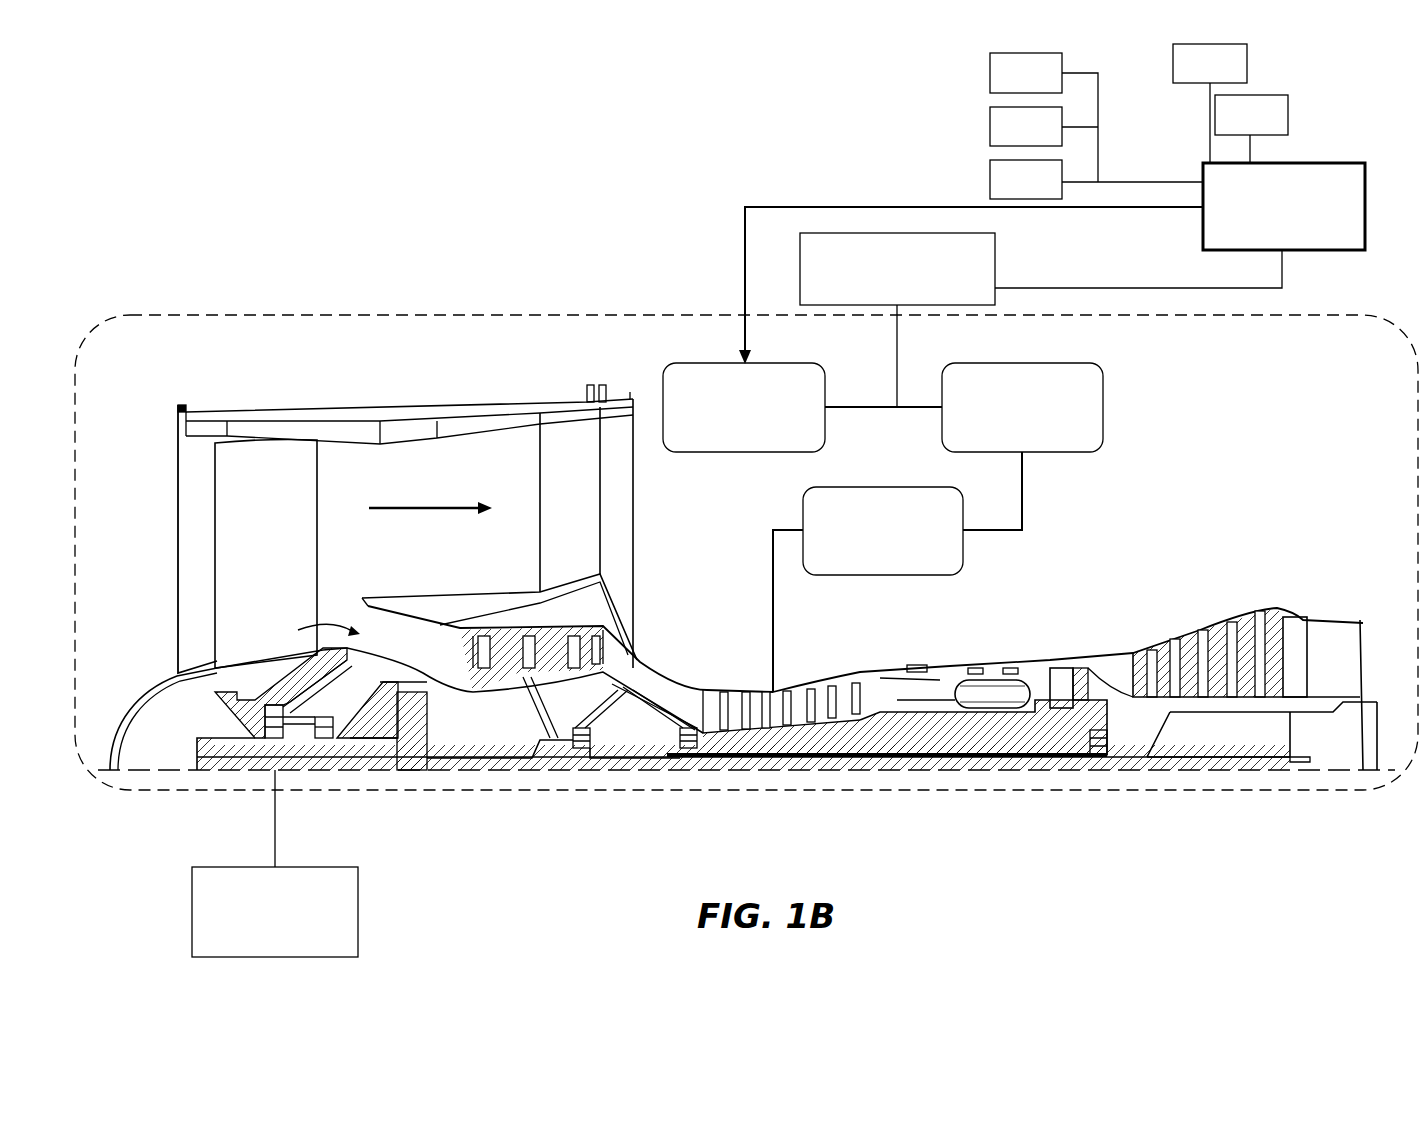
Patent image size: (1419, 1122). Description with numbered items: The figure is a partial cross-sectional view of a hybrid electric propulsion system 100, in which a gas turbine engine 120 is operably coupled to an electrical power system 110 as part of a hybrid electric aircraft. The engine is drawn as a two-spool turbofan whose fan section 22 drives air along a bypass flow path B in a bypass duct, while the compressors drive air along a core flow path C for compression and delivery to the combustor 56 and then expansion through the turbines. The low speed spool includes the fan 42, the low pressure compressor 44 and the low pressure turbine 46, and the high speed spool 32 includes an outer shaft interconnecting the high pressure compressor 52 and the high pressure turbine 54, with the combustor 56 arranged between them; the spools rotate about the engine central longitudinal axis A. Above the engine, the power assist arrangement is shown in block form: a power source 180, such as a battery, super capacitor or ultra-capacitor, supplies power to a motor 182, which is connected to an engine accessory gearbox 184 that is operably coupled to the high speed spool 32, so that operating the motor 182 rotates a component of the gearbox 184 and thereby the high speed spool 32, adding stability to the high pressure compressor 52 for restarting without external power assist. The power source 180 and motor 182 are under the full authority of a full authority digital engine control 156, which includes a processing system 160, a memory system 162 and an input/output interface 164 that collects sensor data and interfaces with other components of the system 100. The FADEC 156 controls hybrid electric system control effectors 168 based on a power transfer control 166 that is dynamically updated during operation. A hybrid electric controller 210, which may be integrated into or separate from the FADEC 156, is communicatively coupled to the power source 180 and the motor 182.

The hybrid electric propulsion system 100 is at (305, 207).
The gas turbine engine 120 is at (252, 264).
The fan section 22 is at (268, 386).
The fan 42 is at (266, 553).
The low pressure compressor 44 is at (553, 650).
The high pressure compressor 52 is at (788, 737).
The high speed spool 32 is at (897, 723).
The combustor 56 is at (987, 692).
The high pressure turbine 54 is at (1060, 672).
The low pressure turbine 46 is at (1220, 625).
The engine central longitudinal axis A is at (1372, 790).
The bypass flow path B is at (435, 505).
The core flow path C is at (298, 630).
The electrical power system 110 is at (192, 920).
The power source 180 is at (732, 364).
The motor 182 is at (1020, 364).
The engine accessory gearbox 184 is at (965, 545).
The full authority digital engine control 156 is at (1283, 163).
The processing system 160 is at (1026, 73).
The memory system 162 is at (1026, 126).
The input/output interface 164 is at (1026, 179).
The power transfer control 166 is at (1210, 63).
The hybrid electric system control effectors 168 is at (1251, 115).
The hybrid electric controller 210 is at (897, 269).